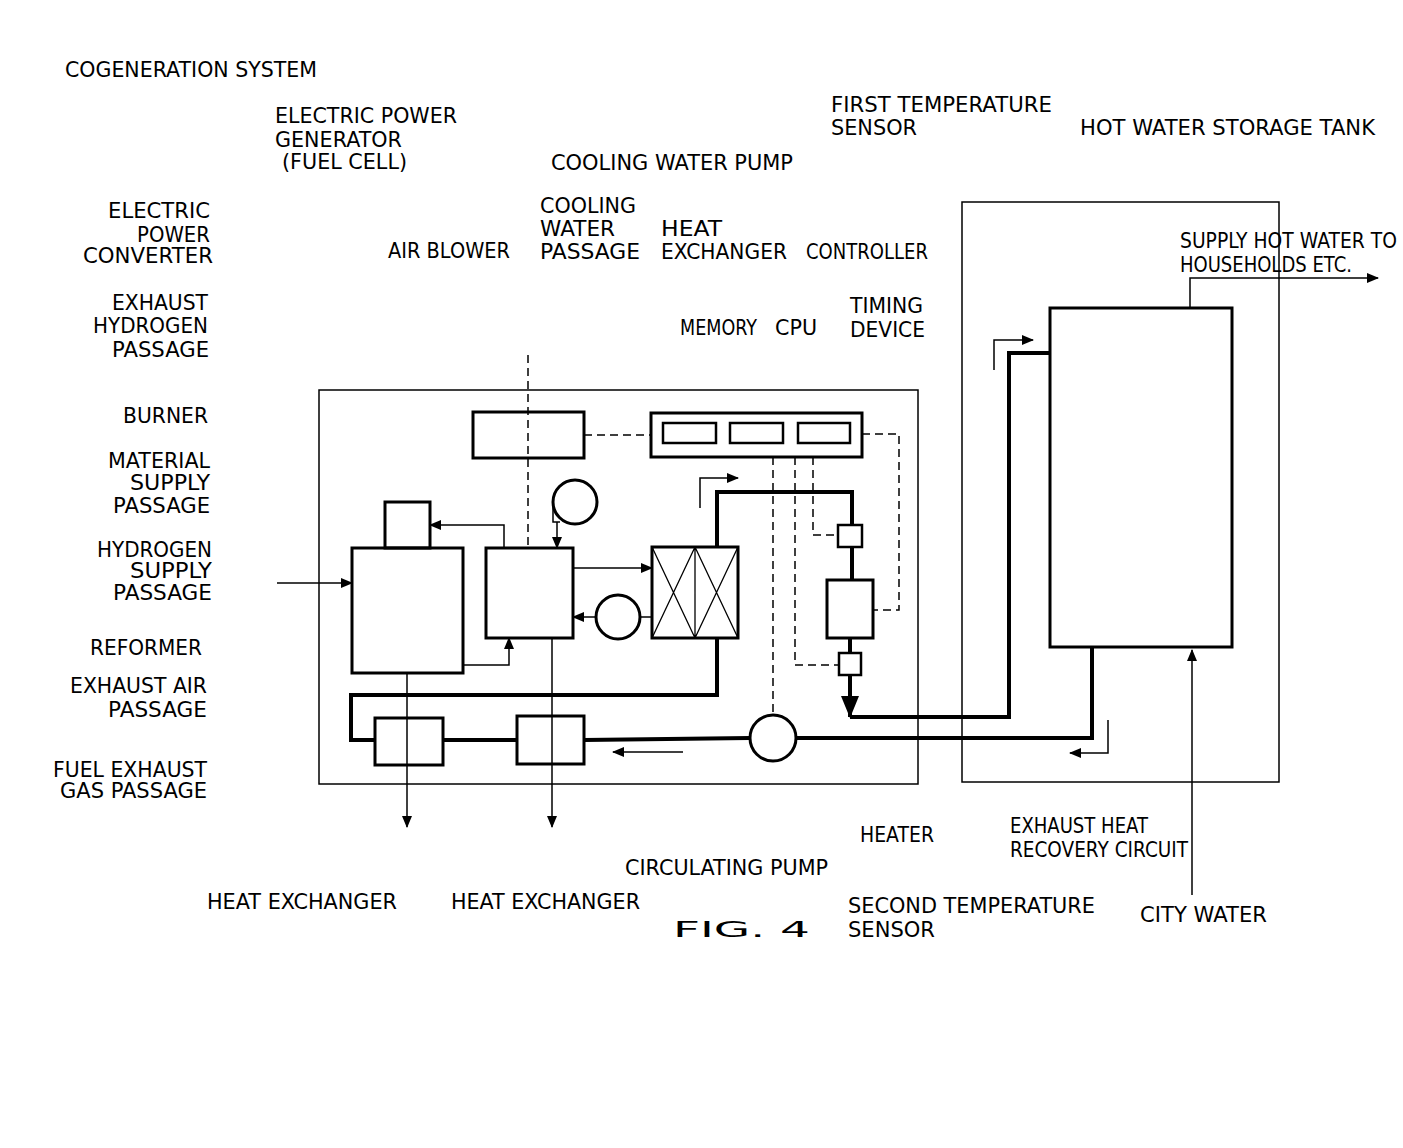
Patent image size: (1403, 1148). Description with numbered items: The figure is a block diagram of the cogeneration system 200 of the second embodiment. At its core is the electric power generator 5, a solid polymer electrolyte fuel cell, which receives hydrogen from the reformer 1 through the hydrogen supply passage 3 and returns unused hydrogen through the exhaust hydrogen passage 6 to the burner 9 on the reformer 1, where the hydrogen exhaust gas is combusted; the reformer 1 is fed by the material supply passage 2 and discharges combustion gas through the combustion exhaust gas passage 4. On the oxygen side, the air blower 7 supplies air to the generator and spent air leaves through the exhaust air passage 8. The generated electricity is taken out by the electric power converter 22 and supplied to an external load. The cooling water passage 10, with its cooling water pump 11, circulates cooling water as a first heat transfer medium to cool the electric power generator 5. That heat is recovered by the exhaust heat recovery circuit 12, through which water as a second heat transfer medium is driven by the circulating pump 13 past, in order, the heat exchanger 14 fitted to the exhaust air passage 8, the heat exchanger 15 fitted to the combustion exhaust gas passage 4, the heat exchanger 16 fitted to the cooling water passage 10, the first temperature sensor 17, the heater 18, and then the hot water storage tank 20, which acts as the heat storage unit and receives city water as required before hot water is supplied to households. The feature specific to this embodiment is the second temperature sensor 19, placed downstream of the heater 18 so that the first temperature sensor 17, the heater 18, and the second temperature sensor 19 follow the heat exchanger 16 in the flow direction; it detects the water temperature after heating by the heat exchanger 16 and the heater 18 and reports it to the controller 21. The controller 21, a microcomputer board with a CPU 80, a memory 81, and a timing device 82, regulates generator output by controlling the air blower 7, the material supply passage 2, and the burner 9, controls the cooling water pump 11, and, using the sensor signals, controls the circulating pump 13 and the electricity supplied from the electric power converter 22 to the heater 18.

The cogeneration system 200 is at (252, 187).
The reformer 1 is at (352, 646).
The material supply passage 2 is at (307, 582).
The hydrogen supply passage 3 is at (485, 665).
The combustion exhaust gas passage 4 is at (407, 705).
The electric power generator 5 is at (517, 547).
The exhaust hydrogen passage 6 is at (500, 525).
The air blower 7 is at (573, 478).
The exhaust air passage 8 is at (552, 670).
The burner 9 is at (385, 525).
The cooling water passage 10 is at (613, 567).
The cooling water pump 11 is at (620, 593).
The exhaust heat recovery circuit 12 is at (1012, 678).
The circulating pump 13 is at (773, 762).
The heat exchanger 14 is at (533, 765).
The heat exchanger 15 is at (393, 765).
The heat exchanger 16 is at (660, 547).
The first temperature sensor 17 is at (862, 525).
The heater 18 is at (835, 640).
The second temperature sensor 19 is at (862, 667).
The hot water storage tank 20 is at (1143, 308).
The controller 21 is at (823, 413).
The electric power converter 22 is at (473, 432).
The CPU 80 is at (772, 423).
The memory 81 is at (690, 423).
The timing device 82 is at (845, 423).